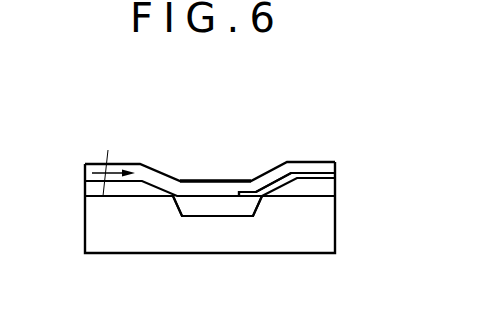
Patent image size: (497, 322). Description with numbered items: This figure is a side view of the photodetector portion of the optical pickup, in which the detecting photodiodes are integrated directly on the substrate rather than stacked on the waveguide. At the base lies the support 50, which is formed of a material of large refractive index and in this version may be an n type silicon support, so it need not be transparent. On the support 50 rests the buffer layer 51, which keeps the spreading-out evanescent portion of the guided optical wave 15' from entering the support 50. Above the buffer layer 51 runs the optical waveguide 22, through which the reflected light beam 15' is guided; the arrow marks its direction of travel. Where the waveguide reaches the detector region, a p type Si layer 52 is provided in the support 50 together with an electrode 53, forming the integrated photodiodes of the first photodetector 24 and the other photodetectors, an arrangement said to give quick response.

The reflected light beam 15' is at (168, 153).
The optical waveguide 22 is at (270, 180).
The first photodetector 24 is at (190, 141).
The support 50 is at (180, 232).
The buffer layer 51 is at (129, 186).
The p type Si layer 52 is at (227, 205).
The electrode 53 is at (317, 167).